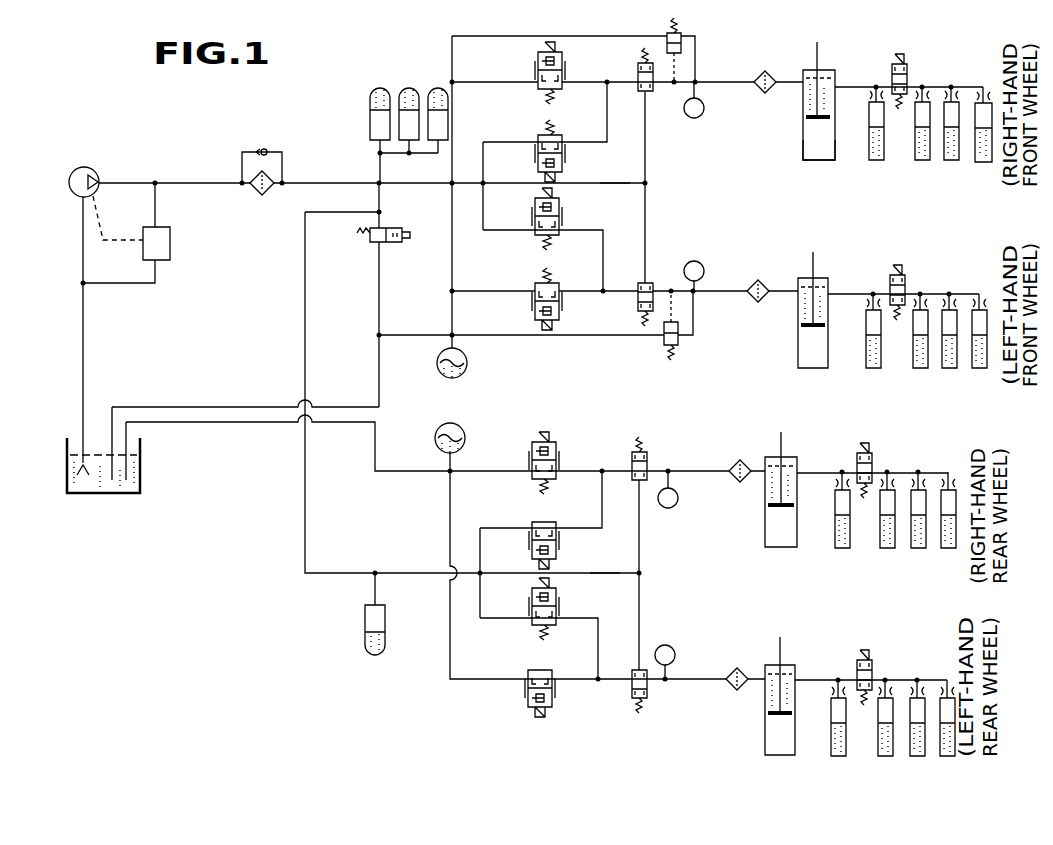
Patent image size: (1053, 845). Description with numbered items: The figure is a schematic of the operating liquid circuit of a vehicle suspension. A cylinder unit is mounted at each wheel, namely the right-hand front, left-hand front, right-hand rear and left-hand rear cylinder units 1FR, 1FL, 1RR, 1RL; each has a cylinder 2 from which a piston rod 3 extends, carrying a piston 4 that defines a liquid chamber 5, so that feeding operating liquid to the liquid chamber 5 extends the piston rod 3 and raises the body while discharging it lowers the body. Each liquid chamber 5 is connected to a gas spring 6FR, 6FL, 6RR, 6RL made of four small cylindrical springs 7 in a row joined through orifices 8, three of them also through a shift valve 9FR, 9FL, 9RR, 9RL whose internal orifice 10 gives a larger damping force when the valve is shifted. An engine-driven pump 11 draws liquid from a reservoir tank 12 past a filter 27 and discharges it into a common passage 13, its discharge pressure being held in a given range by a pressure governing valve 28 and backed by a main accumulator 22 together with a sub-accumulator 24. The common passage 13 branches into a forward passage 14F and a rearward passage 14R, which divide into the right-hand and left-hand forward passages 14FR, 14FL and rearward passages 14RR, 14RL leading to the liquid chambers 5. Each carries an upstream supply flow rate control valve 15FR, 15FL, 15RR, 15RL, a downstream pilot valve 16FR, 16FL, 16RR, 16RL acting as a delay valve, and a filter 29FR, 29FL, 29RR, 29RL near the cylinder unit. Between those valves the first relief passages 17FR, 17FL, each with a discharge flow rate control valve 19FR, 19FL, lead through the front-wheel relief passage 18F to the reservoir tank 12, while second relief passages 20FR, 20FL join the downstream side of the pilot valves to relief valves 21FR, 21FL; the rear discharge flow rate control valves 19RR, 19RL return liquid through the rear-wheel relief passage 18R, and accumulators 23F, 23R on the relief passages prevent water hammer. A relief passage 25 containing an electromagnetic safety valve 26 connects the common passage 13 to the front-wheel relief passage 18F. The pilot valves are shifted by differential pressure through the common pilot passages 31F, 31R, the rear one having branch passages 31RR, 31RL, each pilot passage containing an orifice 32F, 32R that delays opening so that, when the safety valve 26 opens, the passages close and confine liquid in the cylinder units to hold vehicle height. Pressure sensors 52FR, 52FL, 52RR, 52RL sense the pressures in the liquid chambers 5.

The right-hand front wheel cylinder unit 1FR is at (787, 144).
The left-hand front wheel cylinder unit 1FL is at (785, 354).
The right-hand rear wheel cylinder unit 1RR is at (753, 543).
The left-hand rear wheel cylinder unit 1RL is at (752, 737).
The cylinder 2 is at (833, 146).
The piston rod 3 is at (820, 46).
The piston 4 is at (829, 121).
The liquid chamber 5 is at (833, 76).
The right-hand front gas spring 6FR is at (936, 176).
The left-hand front gas spring 6FL is at (924, 385).
The right-hand rear gas spring 6RR is at (906, 567).
The left-hand rear gas spring 6RL is at (894, 758).
The cylindrical spring 7 is at (884, 142).
The orifice 8 is at (870, 92).
The right-hand front shift valve 9FR is at (906, 58).
The left-hand front shift valve 9FL is at (906, 276).
The right-hand rear shift valve 9RR is at (875, 462).
The left-hand rear shift valve 9RL is at (871, 658).
The orifice 10 is at (891, 62).
The pump 11 is at (96, 170).
The reservoir tank 12 is at (62, 440).
The common passage 13 is at (318, 182).
The forward passage 14F is at (419, 184).
The rearward passage 14R is at (305, 257).
The right-hand forward passage 14FR is at (607, 112).
The left-hand forward passage 14FL is at (548, 240).
The right-hand rearward passage 14RR is at (602, 505).
The left-hand rearward passage 14RL is at (573, 620).
The supply flow rate control valve 15FR is at (537, 167).
The supply flow rate control valve 15FL is at (561, 208).
The supply flow rate control valve 15RR is at (558, 545).
The supply flow rate control valve 15RL is at (559, 596).
The pilot valve 16FR is at (655, 93).
The pilot valve 16FL is at (648, 282).
The pilot valve 16RR is at (647, 452).
The pilot valve 16RL is at (646, 697).
The first relief passage 17FR is at (490, 86).
The first relief passage 17FL is at (487, 289).
The front-wheel relief passage 18F is at (253, 406).
The rear-wheel relief passage 18R is at (257, 424).
The discharge flow rate control valve 19FR is at (572, 60).
The discharge flow rate control valve 19FL is at (561, 306).
The discharge flow rate control valve 19RR is at (564, 448).
The discharge flow rate control valve 19RL is at (560, 700).
The second relief passage 20FR is at (510, 36).
The second relief passage 20FL is at (590, 337).
The relief valve 21FR is at (697, 36).
The relief valve 21FL is at (678, 348).
The main accumulator 22 is at (386, 77).
The accumulator 23F is at (468, 364).
The accumulator 23R is at (462, 434).
The sub-accumulator 24 is at (385, 640).
The relief passage 25 is at (375, 287).
The safety valve 26 is at (366, 246).
The filter 27 is at (260, 196).
The pressure governing valve 28 is at (171, 248).
The filter 29FR is at (768, 71).
The filter 29FL is at (757, 304).
The filter 29RR is at (735, 483).
The filter 29RL is at (745, 662).
The common pilot passage 31F is at (500, 186).
The rear common pilot passage 31R is at (499, 576).
The branch pilot passage 31RR is at (640, 545).
The branch pilot passage 31RL is at (640, 630).
The orifice 32F is at (619, 177).
The orifice 32R is at (615, 571).
The pressure sensor 52FR is at (705, 110).
The pressure sensor 52FL is at (702, 260).
The pressure sensor 52RR is at (670, 508).
The pressure sensor 52RL is at (670, 648).